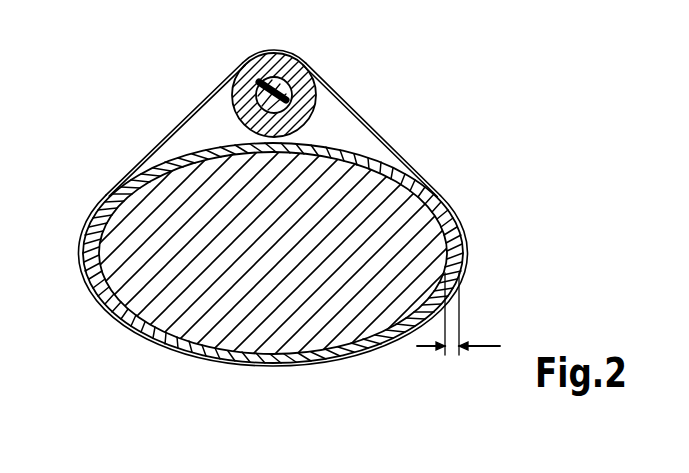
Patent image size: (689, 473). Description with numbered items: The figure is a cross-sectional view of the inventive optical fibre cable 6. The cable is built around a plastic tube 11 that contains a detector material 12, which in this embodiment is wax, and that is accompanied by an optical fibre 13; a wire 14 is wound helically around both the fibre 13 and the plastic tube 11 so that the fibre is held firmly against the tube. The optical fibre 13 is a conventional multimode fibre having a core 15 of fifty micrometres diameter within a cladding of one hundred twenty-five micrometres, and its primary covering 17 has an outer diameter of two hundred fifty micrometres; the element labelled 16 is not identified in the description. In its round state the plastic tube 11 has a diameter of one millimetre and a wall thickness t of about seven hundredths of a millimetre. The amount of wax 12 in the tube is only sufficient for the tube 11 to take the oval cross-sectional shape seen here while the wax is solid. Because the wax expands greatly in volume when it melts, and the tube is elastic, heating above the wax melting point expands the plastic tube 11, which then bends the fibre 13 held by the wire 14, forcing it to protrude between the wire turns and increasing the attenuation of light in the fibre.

The optical fibre cable 6 is at (96, 140).
The plastic tube 11 is at (352, 149).
The detector material 12 is at (377, 214).
The optical fibre 13 is at (326, 106).
The wire 14 is at (186, 117).
The core 15 is at (232, 72).
The web right side 16 is at (308, 62).
The primary covering 17 is at (270, 53).
The wall thickness t is at (458, 335).